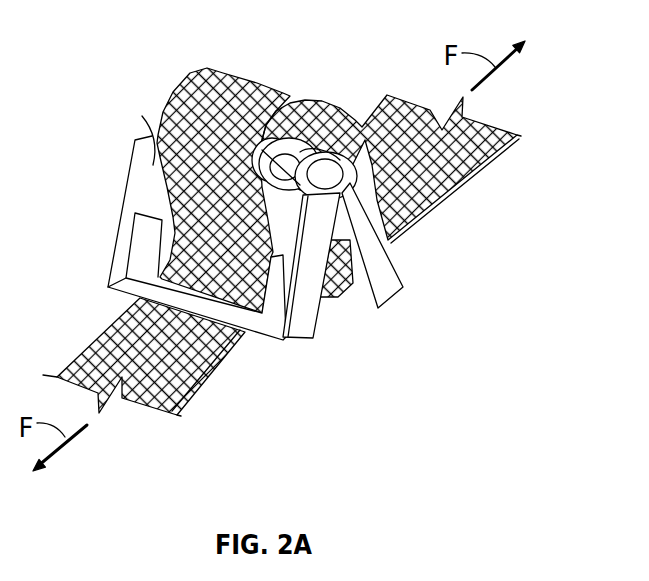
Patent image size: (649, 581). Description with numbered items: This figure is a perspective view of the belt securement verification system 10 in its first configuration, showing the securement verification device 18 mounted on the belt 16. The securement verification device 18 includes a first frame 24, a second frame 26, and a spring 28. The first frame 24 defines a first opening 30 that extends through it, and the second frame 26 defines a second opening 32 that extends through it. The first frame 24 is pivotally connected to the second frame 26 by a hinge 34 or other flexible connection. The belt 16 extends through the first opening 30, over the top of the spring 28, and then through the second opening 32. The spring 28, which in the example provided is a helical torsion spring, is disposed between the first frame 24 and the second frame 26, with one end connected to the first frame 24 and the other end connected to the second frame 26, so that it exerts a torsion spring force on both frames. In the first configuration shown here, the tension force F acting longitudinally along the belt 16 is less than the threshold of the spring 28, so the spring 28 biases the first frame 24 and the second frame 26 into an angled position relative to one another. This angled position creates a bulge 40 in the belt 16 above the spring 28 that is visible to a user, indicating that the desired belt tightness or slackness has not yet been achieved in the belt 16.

The securing device assembly 10 is at (542, 72).
The belt 16 is at (435, 187).
The securement verification device 18 is at (171, 221).
The first frame 24 is at (390, 283).
The second frame 26 is at (303, 322).
The spring 28 is at (152, 134).
The first opening 30 is at (338, 294).
The second opening 32 is at (145, 246).
The hinge 34 is at (277, 170).
The bulge 40 is at (253, 88).